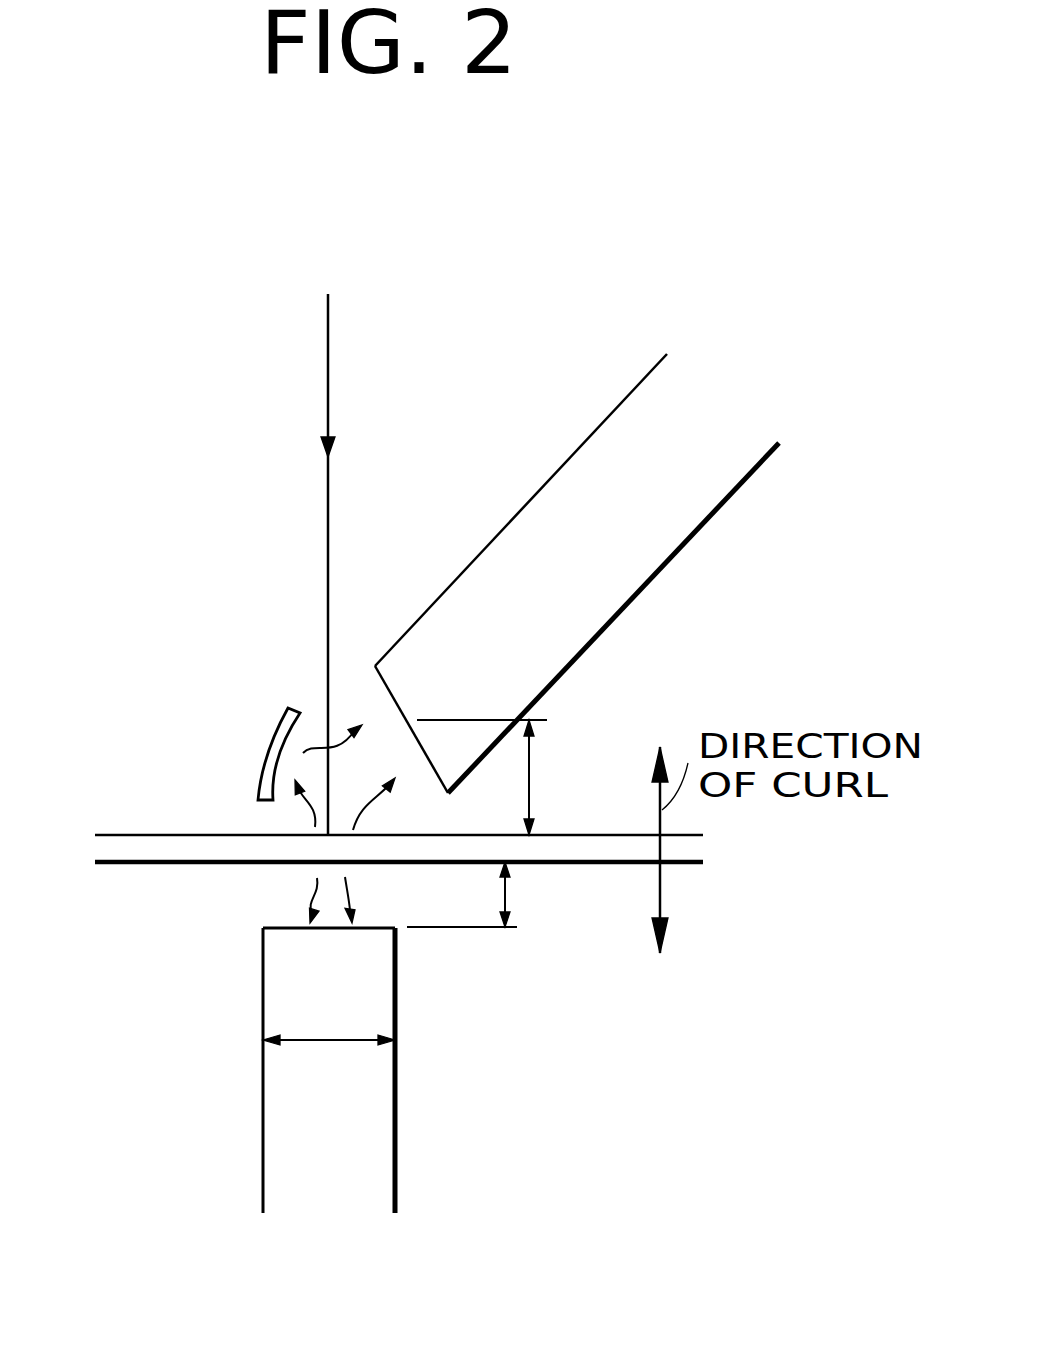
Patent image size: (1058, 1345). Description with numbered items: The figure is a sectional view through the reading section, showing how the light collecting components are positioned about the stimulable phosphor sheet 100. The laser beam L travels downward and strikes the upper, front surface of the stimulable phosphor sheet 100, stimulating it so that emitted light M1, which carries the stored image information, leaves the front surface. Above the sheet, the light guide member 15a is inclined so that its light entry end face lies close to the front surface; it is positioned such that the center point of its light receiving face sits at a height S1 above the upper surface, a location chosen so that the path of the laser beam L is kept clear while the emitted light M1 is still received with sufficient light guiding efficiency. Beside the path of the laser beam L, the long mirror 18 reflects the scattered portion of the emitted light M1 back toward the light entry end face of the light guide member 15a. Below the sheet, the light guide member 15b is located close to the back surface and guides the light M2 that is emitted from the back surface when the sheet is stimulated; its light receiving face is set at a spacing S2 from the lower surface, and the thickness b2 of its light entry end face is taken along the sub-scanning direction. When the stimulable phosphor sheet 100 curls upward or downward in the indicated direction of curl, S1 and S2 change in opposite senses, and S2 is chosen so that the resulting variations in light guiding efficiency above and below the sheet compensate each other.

The laser beam L is at (328, 352).
The light guide member 15a is at (555, 496).
The light guide member 15b is at (373, 1163).
The mirror 18 is at (267, 742).
The stimulable phosphor sheet 100 is at (130, 836).
The emitted light M1 is at (382, 800).
The emitted light M2 is at (350, 888).
The height S1 is at (535, 793).
The spacing S2 is at (512, 897).
The thickness b2 is at (310, 1043).